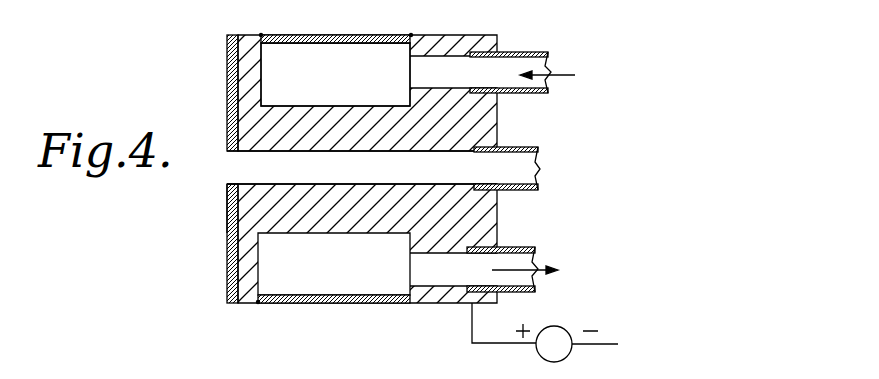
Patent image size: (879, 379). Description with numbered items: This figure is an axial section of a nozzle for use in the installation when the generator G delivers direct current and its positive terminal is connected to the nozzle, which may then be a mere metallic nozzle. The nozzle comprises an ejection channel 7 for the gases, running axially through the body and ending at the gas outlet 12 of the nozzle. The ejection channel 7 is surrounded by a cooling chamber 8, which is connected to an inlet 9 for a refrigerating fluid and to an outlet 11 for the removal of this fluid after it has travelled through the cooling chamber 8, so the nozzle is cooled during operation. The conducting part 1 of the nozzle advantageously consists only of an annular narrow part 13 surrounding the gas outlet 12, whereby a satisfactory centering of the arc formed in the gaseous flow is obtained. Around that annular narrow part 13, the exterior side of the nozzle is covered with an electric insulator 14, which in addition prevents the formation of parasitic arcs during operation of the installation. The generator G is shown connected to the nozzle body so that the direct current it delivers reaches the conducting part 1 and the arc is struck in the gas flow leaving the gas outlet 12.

The conducting part 1 is at (345, 143).
The ejection channel 7 is at (260, 177).
The cooling chamber 8 is at (297, 62).
The inlet 9 is at (517, 54).
The outlet 11 is at (515, 247).
The gas outlet 12 is at (232, 169).
The annular narrow part 13 is at (230, 143).
The electric insulator 14 is at (228, 265).
The generator G is at (557, 333).